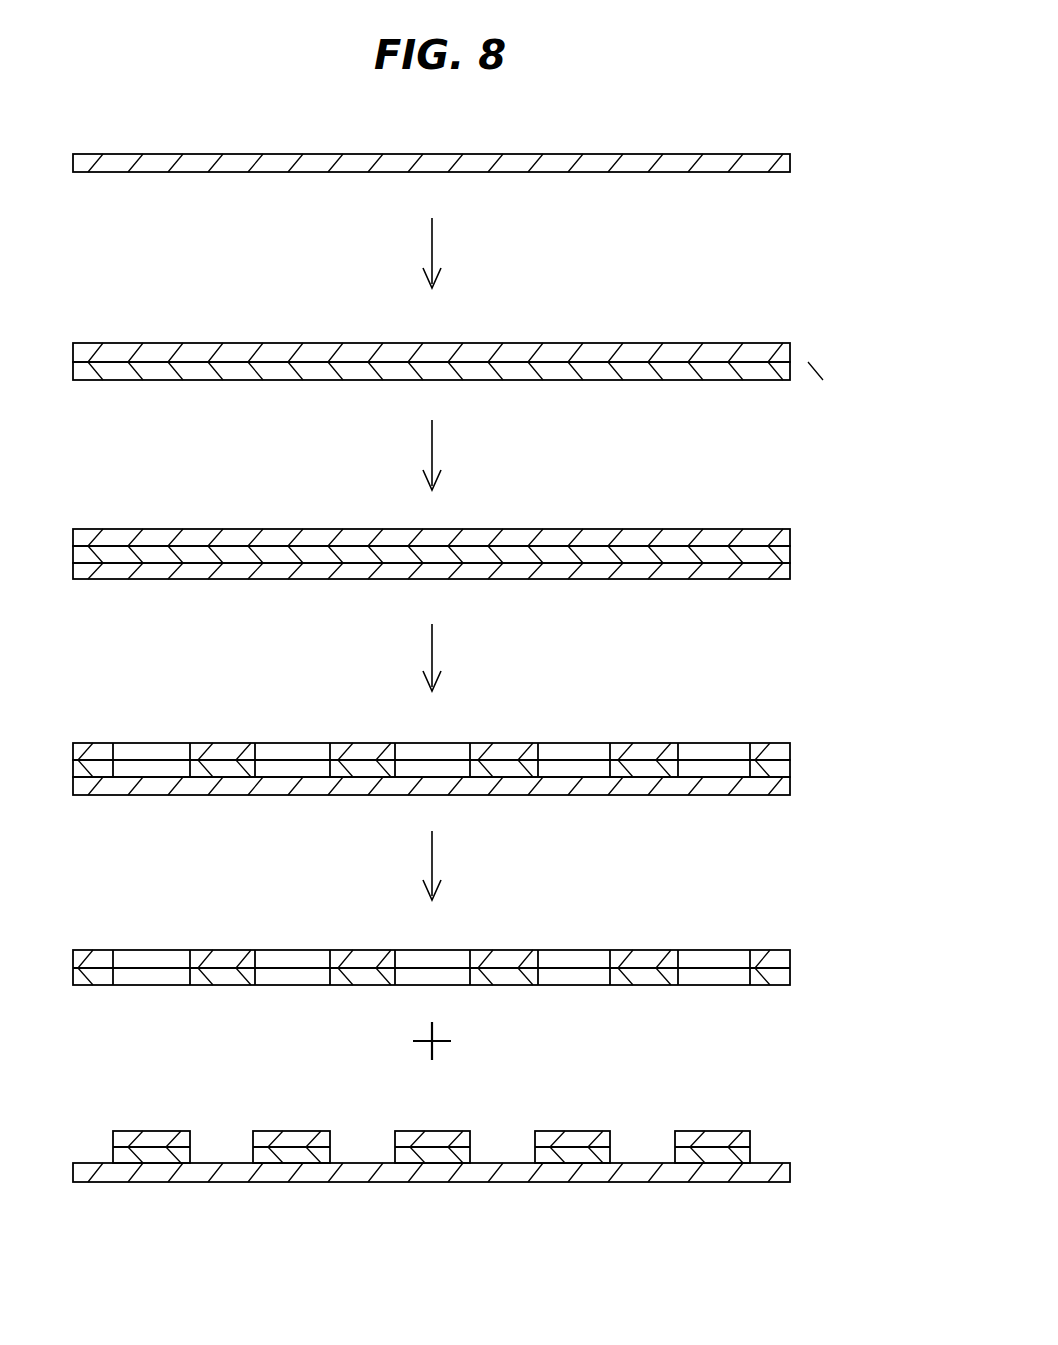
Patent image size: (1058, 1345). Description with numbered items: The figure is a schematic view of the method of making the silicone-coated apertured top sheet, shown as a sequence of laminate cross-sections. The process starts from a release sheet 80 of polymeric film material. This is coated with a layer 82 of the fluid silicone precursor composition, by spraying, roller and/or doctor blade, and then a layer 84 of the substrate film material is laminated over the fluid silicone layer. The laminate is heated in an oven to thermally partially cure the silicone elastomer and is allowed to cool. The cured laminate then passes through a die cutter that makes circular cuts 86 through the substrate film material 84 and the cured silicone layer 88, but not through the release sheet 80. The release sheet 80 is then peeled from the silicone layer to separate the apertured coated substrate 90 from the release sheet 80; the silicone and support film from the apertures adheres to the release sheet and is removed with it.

The release sheet 80 is at (641, 153).
The layer of fluid silicone precursor composition 82 is at (762, 381).
The substrate film material 84 is at (750, 580).
The circular cuts 86 is at (612, 760).
The cured silicone layer 88 is at (791, 770).
The apertured coated substrate 90 is at (576, 948).